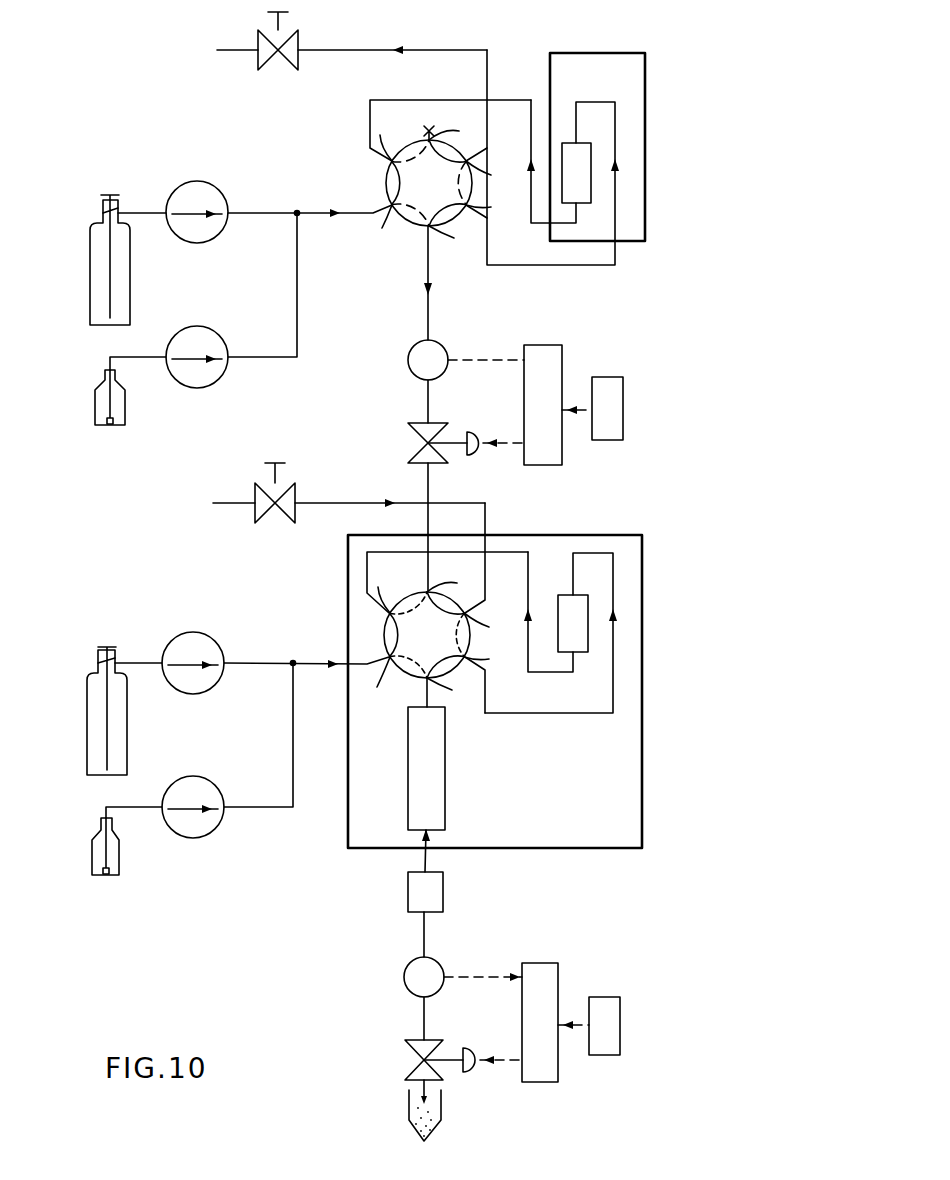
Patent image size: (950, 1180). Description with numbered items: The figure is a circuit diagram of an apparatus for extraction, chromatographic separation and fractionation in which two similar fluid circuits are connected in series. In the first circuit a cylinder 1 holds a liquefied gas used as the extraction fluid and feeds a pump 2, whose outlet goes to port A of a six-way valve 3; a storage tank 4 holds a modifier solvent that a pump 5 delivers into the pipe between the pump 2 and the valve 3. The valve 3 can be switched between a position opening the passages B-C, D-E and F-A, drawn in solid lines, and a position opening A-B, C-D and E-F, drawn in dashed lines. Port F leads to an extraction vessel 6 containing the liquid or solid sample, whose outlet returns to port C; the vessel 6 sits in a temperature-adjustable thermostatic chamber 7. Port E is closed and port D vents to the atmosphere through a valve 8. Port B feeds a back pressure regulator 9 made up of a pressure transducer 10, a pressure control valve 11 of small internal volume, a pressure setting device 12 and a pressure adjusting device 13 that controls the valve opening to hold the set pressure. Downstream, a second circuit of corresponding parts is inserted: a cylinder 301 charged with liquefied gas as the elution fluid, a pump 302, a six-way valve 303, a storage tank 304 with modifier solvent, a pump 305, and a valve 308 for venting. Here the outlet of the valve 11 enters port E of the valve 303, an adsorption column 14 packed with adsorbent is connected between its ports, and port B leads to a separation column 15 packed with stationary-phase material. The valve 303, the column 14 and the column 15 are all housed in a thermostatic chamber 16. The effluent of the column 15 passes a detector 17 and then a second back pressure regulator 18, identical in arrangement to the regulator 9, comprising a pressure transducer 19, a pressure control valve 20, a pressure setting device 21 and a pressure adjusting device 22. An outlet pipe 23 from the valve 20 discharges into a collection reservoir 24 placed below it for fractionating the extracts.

The cylinder 1 is at (90, 262).
The pump 2 is at (222, 192).
The six-way valve 3 is at (383, 178).
The storage tank 4 is at (95, 403).
The pump 5 is at (222, 330).
The extraction vessel 6 is at (591, 195).
The thermostatic chamber 7 is at (645, 127).
The valve 8 is at (300, 42).
The back pressure regulator 9 is at (340, 410).
The pressure transducer 10 is at (408, 357).
The pressure control valve 11 is at (413, 425).
The pressure setting device 12 is at (623, 414).
The pressure adjusting device 13 is at (562, 455).
The adsorption column 14 is at (586, 655).
The separation column 15 is at (445, 776).
The thermostatic chamber 16 is at (642, 631).
The detector 17 is at (408, 898).
The back pressure regulator 18 is at (340, 1034).
The pressure transducer 19 is at (404, 976).
The pressure control valve 20 is at (408, 1042).
The pressure setting device 21 is at (620, 1035).
The pressure adjusting device 22 is at (556, 964).
The outlet pipe 23 is at (410, 1086).
The collection reservoir 24 is at (441, 1118).
The cylinder 301 is at (87, 712).
The pump 302 is at (219, 680).
The six-way valve 303 is at (408, 690).
The storage tank 304 is at (92, 851).
The pump 305 is at (214, 782).
The valve 308 is at (257, 518).